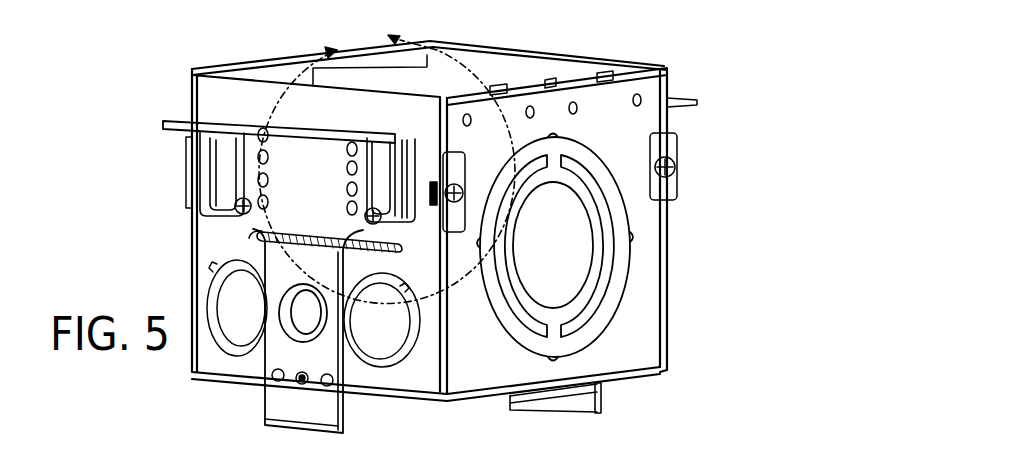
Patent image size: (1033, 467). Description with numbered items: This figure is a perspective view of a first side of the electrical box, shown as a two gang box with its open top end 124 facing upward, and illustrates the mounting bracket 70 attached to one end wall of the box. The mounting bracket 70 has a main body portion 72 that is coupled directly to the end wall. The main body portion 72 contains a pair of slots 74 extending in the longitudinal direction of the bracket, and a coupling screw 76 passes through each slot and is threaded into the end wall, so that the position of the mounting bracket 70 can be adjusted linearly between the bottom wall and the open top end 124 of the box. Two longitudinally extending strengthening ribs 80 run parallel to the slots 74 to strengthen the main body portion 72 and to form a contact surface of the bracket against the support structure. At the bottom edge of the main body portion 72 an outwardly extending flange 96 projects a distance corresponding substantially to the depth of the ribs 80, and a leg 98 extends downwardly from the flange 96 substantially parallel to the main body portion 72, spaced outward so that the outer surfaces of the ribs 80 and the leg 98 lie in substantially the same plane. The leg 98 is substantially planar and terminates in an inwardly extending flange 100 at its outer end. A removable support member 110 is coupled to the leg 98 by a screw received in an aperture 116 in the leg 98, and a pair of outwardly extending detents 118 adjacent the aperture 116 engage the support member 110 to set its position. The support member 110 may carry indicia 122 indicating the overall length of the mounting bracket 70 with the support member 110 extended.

The mounting bracket 70 is at (164, 123).
The main body portion 72 is at (317, 168).
The slots 74 is at (243, 169).
The coupling screw 76 is at (242, 213).
The strengthening ribs 80 is at (210, 162).
The outwardly extending flange 96 is at (258, 237).
The leg 98 is at (293, 408).
The inwardly extending flange 100 is at (345, 431).
The removable support member 110 is at (590, 418).
The aperture 116 is at (300, 383).
The detents 118 is at (274, 375).
The indicia 122 is at (617, 293).
The open top end 124 is at (547, 53).